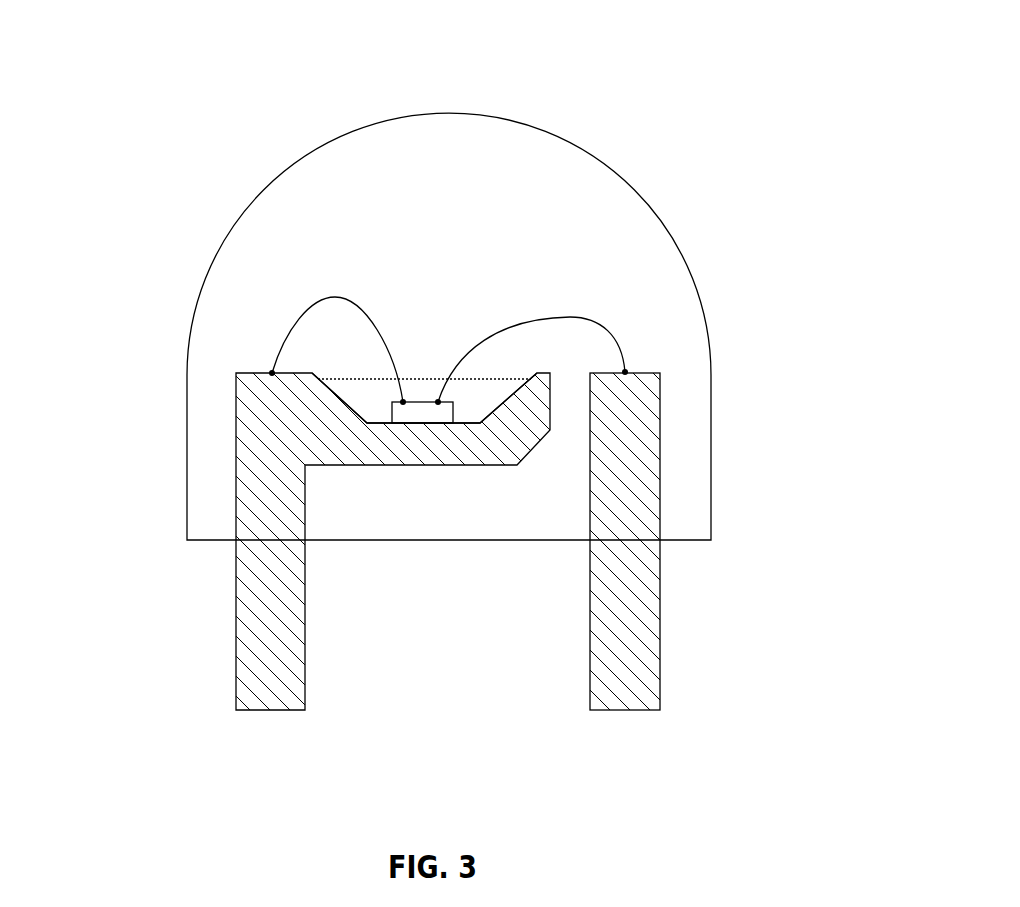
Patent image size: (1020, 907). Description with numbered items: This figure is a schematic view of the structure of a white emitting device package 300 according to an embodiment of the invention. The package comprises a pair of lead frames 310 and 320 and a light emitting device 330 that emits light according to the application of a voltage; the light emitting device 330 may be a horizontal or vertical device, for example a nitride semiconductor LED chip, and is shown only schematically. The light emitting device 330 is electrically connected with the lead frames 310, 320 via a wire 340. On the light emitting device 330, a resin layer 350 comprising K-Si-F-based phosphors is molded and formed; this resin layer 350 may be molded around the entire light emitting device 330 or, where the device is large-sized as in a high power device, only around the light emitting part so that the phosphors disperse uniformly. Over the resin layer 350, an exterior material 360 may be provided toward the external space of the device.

The white emitting device package 300 is at (451, 403).
The lead frame 310 is at (273, 688).
The lead frame 320 is at (627, 688).
The light emitting device 330 is at (423, 410).
The wire 340 is at (297, 323).
The resin layer 350 is at (368, 395).
The exterior material 360 is at (440, 140).